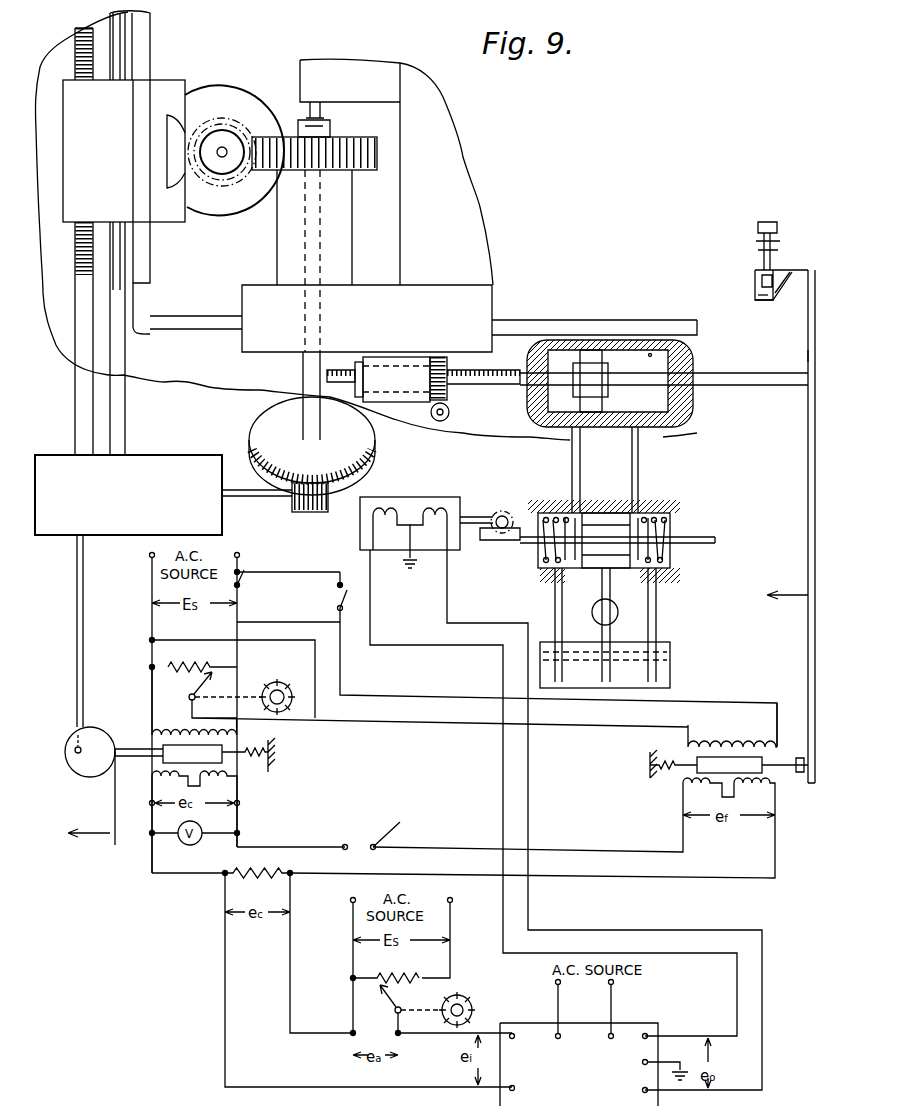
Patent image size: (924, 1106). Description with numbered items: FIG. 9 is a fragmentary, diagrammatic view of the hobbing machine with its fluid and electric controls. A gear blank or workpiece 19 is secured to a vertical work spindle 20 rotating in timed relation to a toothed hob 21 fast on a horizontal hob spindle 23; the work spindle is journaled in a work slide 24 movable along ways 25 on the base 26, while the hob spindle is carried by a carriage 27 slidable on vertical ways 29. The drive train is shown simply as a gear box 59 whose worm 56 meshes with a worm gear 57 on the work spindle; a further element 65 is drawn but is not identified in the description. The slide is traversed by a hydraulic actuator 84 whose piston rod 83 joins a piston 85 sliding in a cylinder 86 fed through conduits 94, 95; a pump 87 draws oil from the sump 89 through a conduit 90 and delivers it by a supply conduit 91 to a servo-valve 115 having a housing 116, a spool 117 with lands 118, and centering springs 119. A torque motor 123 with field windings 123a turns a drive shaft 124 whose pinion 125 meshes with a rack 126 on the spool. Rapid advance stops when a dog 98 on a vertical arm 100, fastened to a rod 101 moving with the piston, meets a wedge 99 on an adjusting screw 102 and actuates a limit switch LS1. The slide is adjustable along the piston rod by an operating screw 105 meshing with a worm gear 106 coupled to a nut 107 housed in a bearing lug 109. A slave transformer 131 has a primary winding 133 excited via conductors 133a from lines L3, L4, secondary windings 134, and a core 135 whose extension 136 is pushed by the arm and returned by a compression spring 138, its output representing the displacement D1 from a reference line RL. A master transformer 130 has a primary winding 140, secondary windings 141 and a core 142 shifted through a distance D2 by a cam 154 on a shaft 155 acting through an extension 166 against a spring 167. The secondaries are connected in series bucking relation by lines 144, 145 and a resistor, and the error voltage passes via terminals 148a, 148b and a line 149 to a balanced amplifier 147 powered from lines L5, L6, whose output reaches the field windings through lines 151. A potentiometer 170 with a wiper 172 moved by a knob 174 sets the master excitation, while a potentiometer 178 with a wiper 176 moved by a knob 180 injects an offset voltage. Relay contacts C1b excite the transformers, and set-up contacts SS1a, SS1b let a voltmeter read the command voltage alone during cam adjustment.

The workpiece 19 is at (378, 153).
The work spindle 20 is at (300, 237).
The hob 21 is at (242, 132).
The hob spindle 23 is at (223, 150).
The work slide 24 is at (248, 297).
The ways 25 is at (203, 322).
The base 26 is at (788, 250).
The hob carriage 27 is at (162, 90).
The vertical ways 29 is at (150, 36).
The worm 56 is at (306, 512).
The worm gear 57 is at (362, 440).
The gear box 59 is at (193, 468).
The rack 65 is at (76, 264).
The piston rod 83 is at (508, 385).
The hydraulic actuator 84 is at (705, 360).
The piston 85 is at (590, 350).
The cylinder 86 is at (650, 352).
The hydraulic pump 87 is at (614, 612).
The sump 89 is at (670, 660).
The conduit 90 is at (603, 633).
The supply conduit 91 is at (605, 625).
The conduit 94 is at (640, 459).
The conduit 95 is at (572, 459).
The dog 98 is at (792, 305).
The wedge-like stop 99 is at (758, 298).
The vertical arm 100 is at (808, 356).
The rod 101 is at (727, 385).
The adjusting screw 102 is at (757, 262).
The operating screw 105 is at (449, 413).
The worm gear 106 is at (438, 357).
The rotatable nut 107 is at (402, 342).
The bearing lug 109 is at (400, 402).
The servo-valve 115 is at (673, 494).
The housing 116 is at (688, 534).
The spool 117 is at (604, 512).
The lands 118 is at (566, 512).
The coil springs 119 is at (540, 560).
The torque motor 123 is at (444, 488).
The field windings 123a is at (373, 520).
The drive shaft 124 is at (486, 514).
The pinion 125 is at (504, 512).
The rack 126 is at (490, 542).
The master transformer 130 is at (147, 727).
The slave transformer 131 is at (783, 733).
The primary winding 133 is at (742, 727).
The conductors 133a is at (633, 718).
The secondary windings 134 is at (690, 790).
The core 135 is at (697, 768).
The extension 136 is at (782, 772).
The compression spring 138 is at (660, 750).
The primary winding 140 is at (165, 730).
The secondary windings 141 is at (158, 790).
The core 142 is at (222, 750).
The line 144 is at (460, 858).
The line 145 is at (430, 890).
The balanced amplifier 147 is at (525, 1017).
The terminal 148a is at (350, 1036).
The terminal 148b is at (400, 1036).
The line 149 is at (262, 1089).
The lines 151 is at (538, 796).
The cam 154 is at (85, 774).
The shaft 155 is at (77, 699).
The extension 166 is at (115, 748).
The compression spring 167 is at (270, 768).
The resistance potentiometer 170 is at (170, 662).
The wiper 172 is at (230, 680).
The adjusting knob 174 is at (288, 712).
The wiper 176 is at (378, 1005).
The potentiometer 178 is at (400, 975).
The adjusting knob 180 is at (466, 1008).
The relay contacts C1b is at (248, 600).
The set up switch contacts SS1a is at (400, 824).
The set up switch contacts SS1b is at (338, 598).
The limit switch LS1 is at (755, 280).
The reference line RL is at (815, 588).
The displacement distance D1 is at (787, 610).
The displacement distance D2 is at (89, 847).
The power line L3 is at (149, 556).
The power line L4 is at (240, 556).
The power line L5 is at (551, 1006).
The power line L6 is at (613, 996).